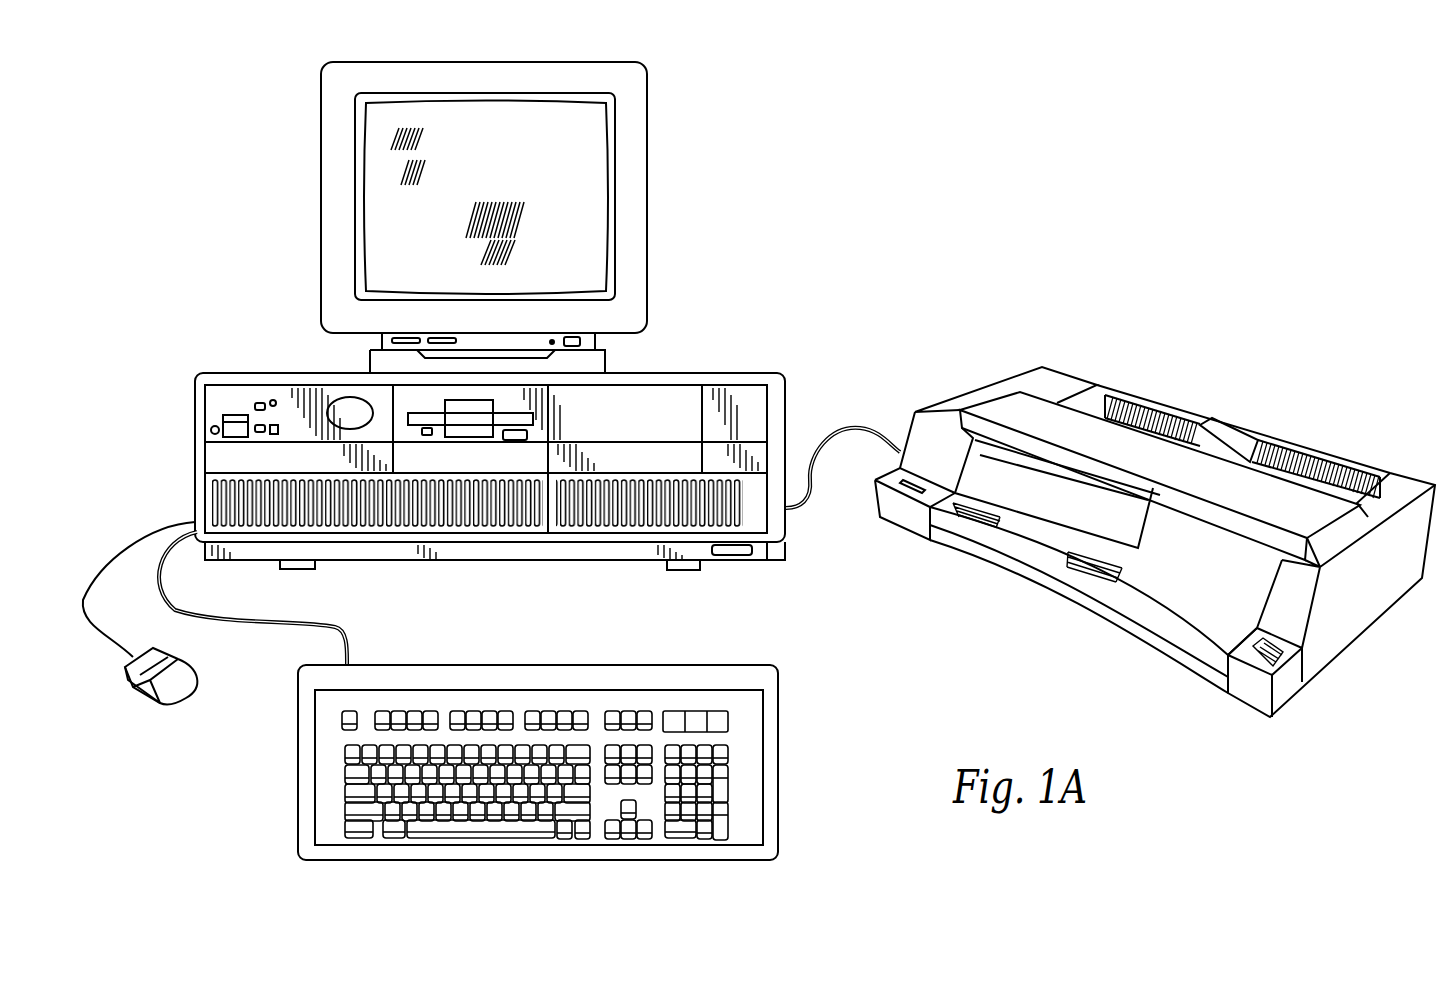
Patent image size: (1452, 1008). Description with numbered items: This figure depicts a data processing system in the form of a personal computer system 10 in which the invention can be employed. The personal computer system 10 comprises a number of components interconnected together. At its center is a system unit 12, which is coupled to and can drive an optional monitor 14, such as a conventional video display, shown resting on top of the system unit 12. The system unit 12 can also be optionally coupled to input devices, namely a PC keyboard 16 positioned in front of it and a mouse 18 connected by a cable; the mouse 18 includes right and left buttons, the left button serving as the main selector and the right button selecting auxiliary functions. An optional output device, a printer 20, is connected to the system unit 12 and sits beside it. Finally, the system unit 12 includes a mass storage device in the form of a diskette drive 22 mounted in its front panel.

The personal computer system 10 is at (866, 180).
The system unit 12 is at (711, 364).
The monitor 14 is at (660, 226).
The PC keyboard 16 is at (651, 652).
The mouse 18 is at (143, 686).
The printer 20 is at (977, 372).
The diskette drive 22 is at (478, 428).